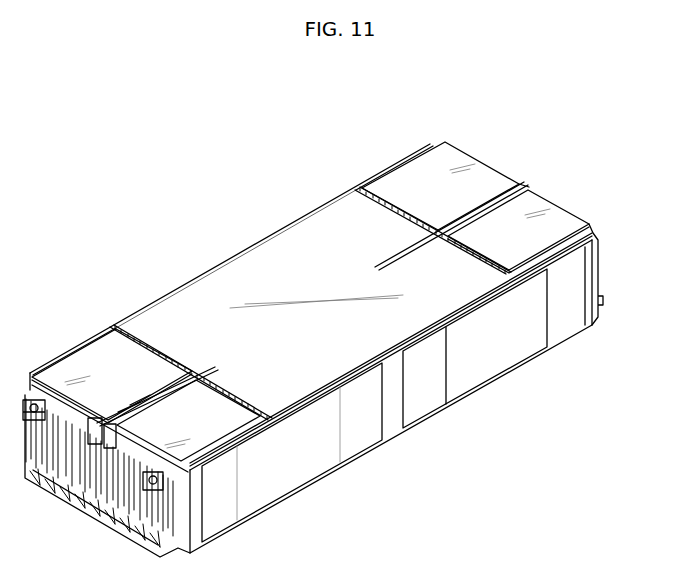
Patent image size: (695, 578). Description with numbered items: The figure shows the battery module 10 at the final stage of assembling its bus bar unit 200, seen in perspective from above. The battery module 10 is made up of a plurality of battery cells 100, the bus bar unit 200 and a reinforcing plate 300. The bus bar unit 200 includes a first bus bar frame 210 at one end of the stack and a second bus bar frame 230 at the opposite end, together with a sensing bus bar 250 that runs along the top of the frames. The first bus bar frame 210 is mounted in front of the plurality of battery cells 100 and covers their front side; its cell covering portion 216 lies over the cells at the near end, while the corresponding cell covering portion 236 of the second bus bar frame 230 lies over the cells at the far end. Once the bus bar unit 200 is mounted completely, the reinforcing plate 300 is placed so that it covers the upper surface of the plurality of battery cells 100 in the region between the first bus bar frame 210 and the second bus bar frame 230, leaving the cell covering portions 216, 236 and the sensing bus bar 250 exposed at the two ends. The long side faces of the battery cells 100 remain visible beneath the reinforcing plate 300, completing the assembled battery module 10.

The battery module 10 is at (167, 177).
The battery cell 100 is at (408, 445).
The bus bar unit 200 is at (606, 254).
The first bus bar frame 210 is at (139, 422).
The cell covering portion 216 is at (98, 360).
The second bus bar frame 230 is at (472, 177).
The cell covering portion 236 is at (483, 173).
The sensing bus bar 250 is at (526, 181).
The reinforcing plate 300 is at (238, 232).